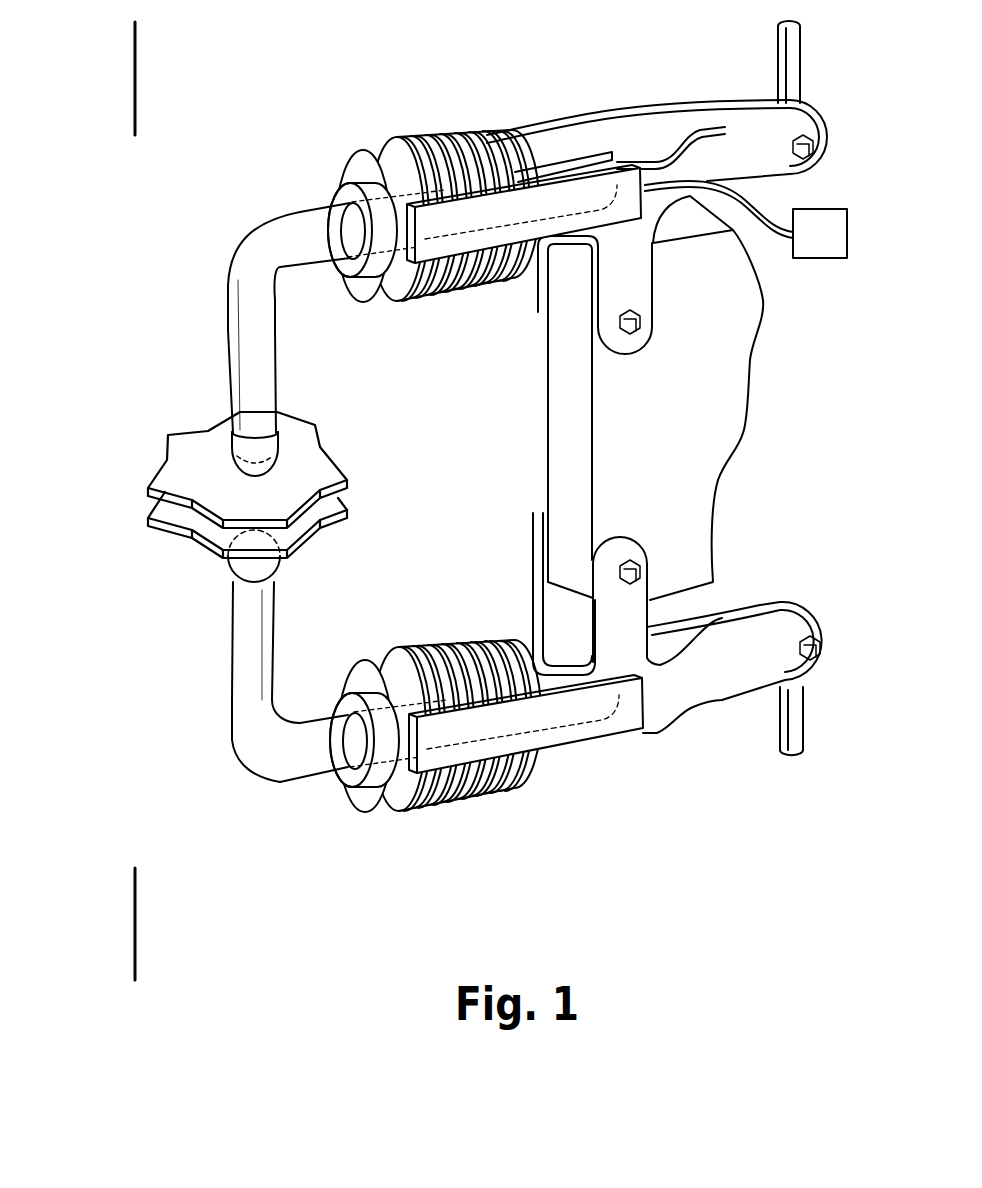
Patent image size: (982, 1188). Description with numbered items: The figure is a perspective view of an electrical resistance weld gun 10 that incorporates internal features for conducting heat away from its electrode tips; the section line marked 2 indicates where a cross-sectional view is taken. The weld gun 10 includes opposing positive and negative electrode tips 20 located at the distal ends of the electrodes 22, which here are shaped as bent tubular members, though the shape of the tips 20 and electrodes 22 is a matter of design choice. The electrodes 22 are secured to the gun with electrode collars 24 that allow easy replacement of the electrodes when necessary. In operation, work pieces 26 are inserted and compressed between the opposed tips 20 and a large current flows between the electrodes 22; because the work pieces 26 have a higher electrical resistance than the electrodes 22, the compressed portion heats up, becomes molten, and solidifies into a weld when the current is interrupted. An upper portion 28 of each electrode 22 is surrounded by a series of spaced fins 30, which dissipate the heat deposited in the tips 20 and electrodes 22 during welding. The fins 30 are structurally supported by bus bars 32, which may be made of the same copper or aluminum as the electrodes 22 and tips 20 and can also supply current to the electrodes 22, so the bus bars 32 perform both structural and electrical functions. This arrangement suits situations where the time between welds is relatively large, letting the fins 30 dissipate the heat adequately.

The section line 2- 2 is at (137, 62).
The weld gun 10 is at (206, 164).
The electrode tips 20 is at (265, 452).
The electrodes 22 is at (265, 373).
The electrode collars 24 is at (330, 192).
The work pieces 26 is at (157, 475).
The upper portion 28 is at (300, 213).
The fins 30 is at (370, 160).
The bus bars 32 is at (510, 243).